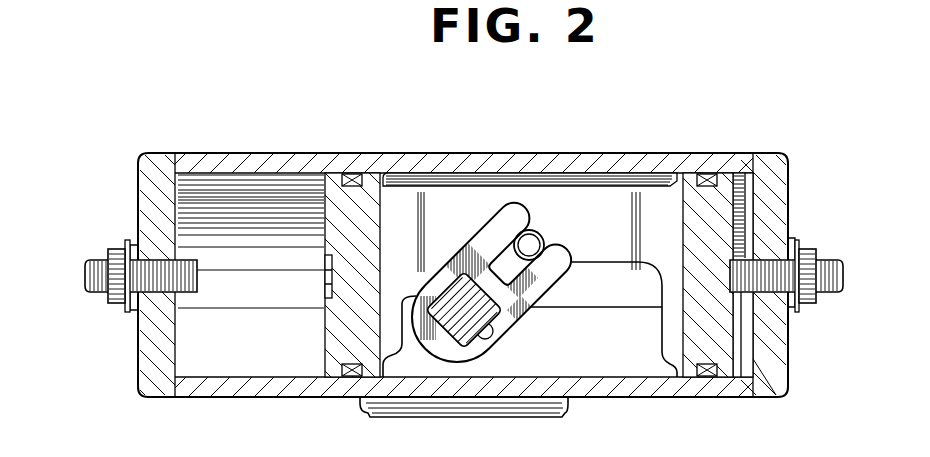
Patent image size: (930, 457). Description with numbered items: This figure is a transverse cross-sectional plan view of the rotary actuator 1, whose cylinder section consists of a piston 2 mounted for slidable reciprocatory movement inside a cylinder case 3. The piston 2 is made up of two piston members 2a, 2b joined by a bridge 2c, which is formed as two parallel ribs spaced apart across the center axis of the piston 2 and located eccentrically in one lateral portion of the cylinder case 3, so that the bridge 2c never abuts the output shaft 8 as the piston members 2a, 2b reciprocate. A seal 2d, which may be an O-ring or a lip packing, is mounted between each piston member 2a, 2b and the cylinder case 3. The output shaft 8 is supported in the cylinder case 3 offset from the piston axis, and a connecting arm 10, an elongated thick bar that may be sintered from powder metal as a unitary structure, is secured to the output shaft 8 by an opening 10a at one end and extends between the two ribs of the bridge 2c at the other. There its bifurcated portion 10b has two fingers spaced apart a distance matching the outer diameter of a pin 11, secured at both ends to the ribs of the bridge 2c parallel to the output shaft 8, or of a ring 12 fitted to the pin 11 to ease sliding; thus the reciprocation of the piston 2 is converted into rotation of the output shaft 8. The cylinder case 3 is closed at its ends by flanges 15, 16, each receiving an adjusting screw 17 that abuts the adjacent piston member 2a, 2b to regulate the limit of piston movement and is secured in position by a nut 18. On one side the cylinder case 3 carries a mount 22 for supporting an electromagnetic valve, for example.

The rotary actuator 1 is at (256, 140).
The piston 2 is at (399, 172).
The piston member 2a is at (333, 172).
The piston member 2b is at (728, 172).
The bridge 2c is at (592, 183).
The seal 2d is at (361, 172).
The cylinder case 3 is at (640, 172).
The output shaft 8 is at (440, 344).
The connecting arm 10 is at (498, 288).
The opening 10a is at (494, 336).
The bifurcated portion 10b is at (500, 223).
The pin 11 is at (548, 270).
The ring 12 is at (541, 234).
The flange 15 is at (155, 155).
The flange 16 is at (769, 160).
The adjusting screw 17 is at (97, 258).
The nut 18 is at (117, 304).
The mount 22 is at (370, 412).